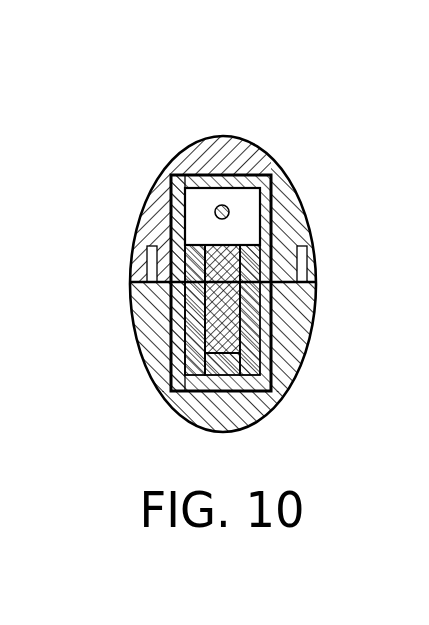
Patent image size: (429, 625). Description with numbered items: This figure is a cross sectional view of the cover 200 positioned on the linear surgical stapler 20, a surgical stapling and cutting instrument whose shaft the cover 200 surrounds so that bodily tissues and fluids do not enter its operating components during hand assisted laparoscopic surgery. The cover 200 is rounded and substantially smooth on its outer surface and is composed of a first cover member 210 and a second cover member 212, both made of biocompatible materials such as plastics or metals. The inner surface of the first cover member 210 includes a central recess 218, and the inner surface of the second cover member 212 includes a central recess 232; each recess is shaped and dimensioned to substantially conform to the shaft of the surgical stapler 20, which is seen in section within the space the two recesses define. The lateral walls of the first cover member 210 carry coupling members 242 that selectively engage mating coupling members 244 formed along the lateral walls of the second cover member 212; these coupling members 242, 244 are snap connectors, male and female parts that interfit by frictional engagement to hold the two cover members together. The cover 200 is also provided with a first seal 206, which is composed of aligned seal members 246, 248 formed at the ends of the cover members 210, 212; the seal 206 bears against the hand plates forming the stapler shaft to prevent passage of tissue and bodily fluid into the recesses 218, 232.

The cover 200 is at (338, 202).
The first cover member 210 is at (275, 152).
The first seal 206 is at (150, 261).
The coupling members 242 is at (303, 239).
The mating coupling members 244 is at (305, 275).
The second cover member 212 is at (297, 372).
The central recess 232 is at (158, 392).
The seal member 248 is at (271, 404).
The seal member 246 is at (172, 178).
The central recess 218 is at (163, 212).
The linear surgical stapler 20 is at (240, 206).